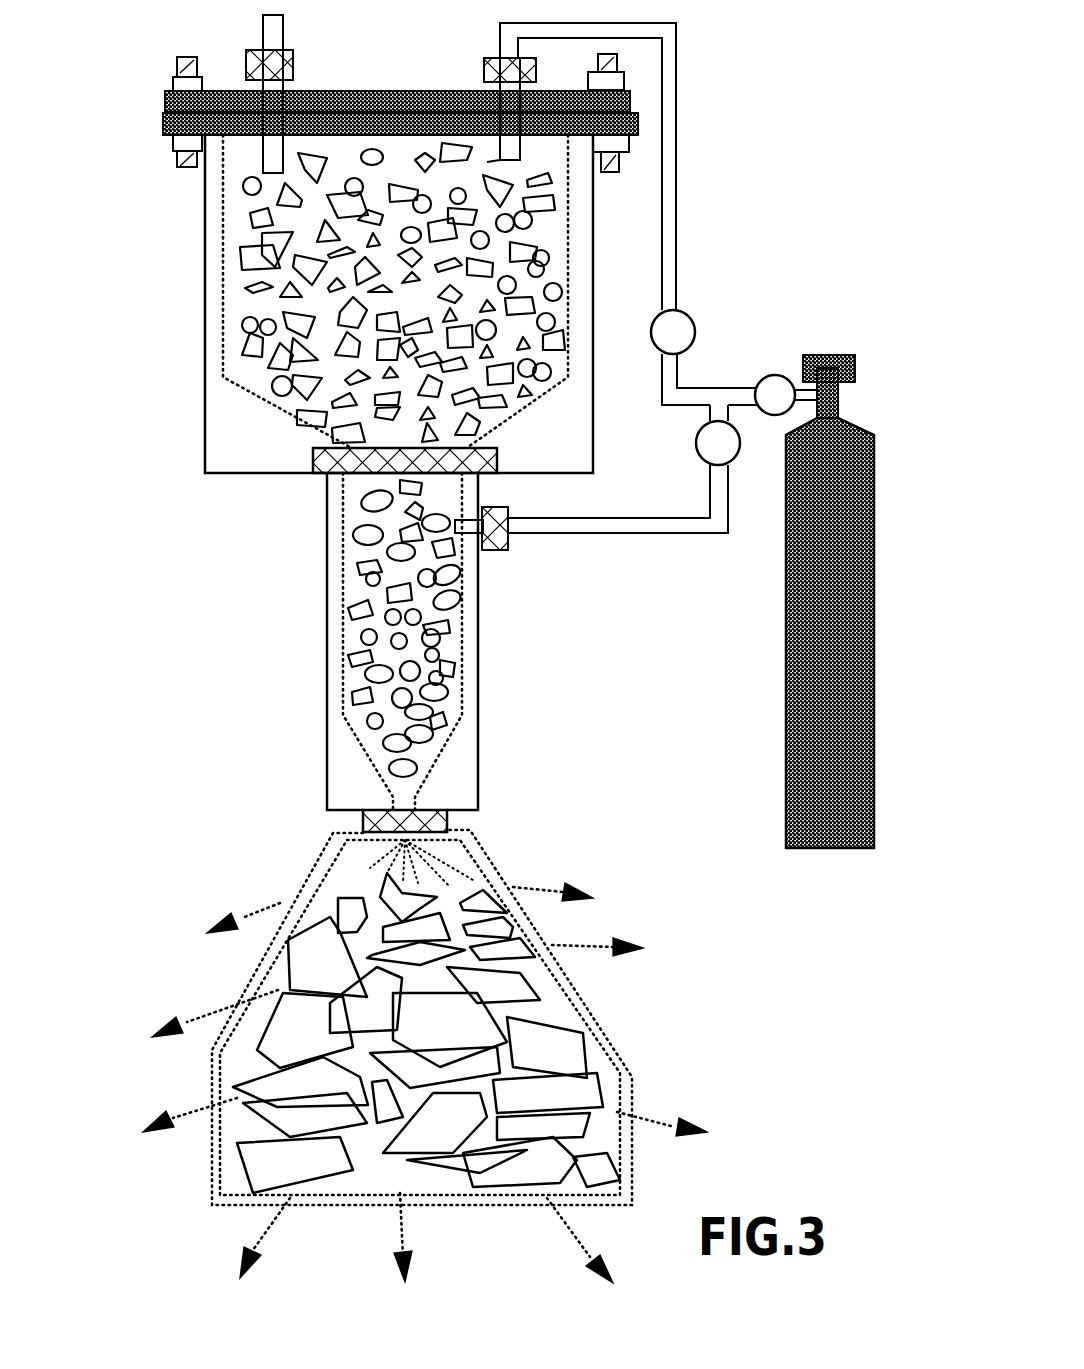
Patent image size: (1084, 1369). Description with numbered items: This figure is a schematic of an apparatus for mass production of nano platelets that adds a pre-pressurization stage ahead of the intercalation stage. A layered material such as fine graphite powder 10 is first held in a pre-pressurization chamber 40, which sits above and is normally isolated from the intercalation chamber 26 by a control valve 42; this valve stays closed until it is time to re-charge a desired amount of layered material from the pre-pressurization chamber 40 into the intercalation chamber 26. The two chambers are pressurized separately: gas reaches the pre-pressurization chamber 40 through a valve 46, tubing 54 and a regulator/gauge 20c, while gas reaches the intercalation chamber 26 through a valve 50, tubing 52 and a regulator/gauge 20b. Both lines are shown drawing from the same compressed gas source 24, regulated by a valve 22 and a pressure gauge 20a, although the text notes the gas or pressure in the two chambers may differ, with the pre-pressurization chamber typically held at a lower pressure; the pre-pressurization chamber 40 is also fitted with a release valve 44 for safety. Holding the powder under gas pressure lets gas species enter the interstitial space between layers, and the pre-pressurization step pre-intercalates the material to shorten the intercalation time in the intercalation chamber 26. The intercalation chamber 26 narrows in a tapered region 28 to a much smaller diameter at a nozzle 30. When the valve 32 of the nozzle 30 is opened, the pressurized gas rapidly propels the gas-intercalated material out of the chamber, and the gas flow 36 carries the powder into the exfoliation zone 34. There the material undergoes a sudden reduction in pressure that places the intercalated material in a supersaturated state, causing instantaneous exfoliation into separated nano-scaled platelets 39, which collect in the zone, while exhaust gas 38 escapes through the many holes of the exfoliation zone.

The fine graphite powder 10 is at (453, 667).
The pressure gauge 20a is at (770, 377).
The regulator/gauge 20b is at (707, 450).
The regulator/gauge 20c is at (683, 325).
The valve 22 is at (833, 355).
The compressed gas source 24 is at (785, 603).
The intercalation chamber 26 is at (475, 593).
The tapered region 28 is at (437, 747).
The nozzle 30 is at (415, 798).
The valve 32 is at (363, 818).
The exfoliation zone 34 is at (595, 1010).
The gas flow 36 is at (445, 863).
The exhaust gas 38 is at (439, 1098).
The nano-scaled platelets 39 is at (570, 1050).
The pre-pressurization chamber 40 is at (223, 357).
The control valve 42 is at (323, 457).
The release valve 44 is at (252, 62).
The valve 46 is at (492, 70).
The valve 50 is at (500, 503).
The tubing 52 is at (653, 533).
The tubing 54 is at (670, 147).